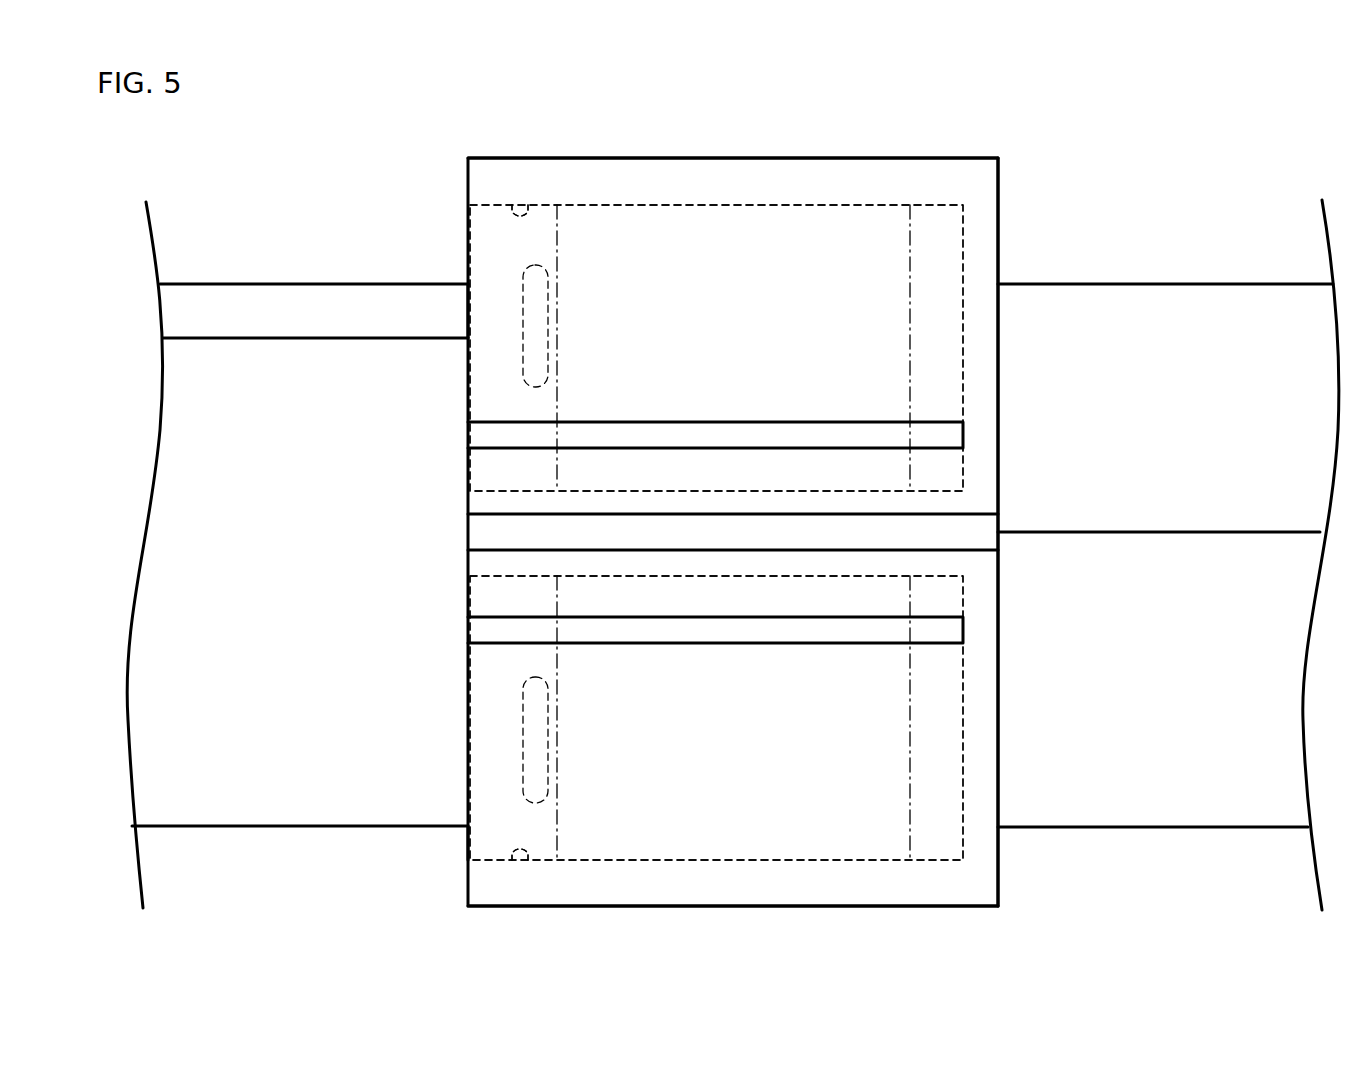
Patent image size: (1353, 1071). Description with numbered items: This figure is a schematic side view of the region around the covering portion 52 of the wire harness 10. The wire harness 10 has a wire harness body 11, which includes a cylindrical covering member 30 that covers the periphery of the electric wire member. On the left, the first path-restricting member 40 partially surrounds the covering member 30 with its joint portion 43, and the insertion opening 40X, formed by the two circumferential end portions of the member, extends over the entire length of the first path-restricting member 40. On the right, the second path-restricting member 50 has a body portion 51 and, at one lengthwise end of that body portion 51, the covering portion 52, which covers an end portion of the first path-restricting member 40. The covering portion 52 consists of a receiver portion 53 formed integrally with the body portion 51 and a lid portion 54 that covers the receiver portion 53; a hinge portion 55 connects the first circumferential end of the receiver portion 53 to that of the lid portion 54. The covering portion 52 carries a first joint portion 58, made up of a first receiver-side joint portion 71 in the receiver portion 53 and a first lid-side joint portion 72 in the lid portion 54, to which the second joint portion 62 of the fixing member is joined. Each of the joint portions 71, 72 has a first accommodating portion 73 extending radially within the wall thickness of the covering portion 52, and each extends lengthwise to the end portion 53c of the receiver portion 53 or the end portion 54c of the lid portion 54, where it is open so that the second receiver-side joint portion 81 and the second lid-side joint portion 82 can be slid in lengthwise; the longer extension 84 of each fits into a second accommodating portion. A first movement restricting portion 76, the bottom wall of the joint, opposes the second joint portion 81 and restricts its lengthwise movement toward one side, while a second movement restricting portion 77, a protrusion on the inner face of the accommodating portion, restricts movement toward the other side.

The wire harness 10 is at (1005, 121).
The wire harness body 11 is at (1134, 282).
The covering member 30 is at (220, 283).
The first path-restricting member 40 is at (232, 829).
The insertion opening 40X is at (305, 338).
The joint portion 43 is at (350, 773).
The second path-restricting member 50 is at (1203, 829).
The body portion 51 is at (1118, 829).
The covering portion 52 is at (733, 907).
The receiver portion 53 is at (833, 890).
The end portion of the receiver portion 53c is at (468, 843).
The lid portion 54 is at (733, 158).
The end portion of the lid portion 54c is at (468, 358).
The hinge portion 55 is at (988, 538).
The first joint portion 58 is at (520, 532).
The second joint portion 62 is at (716, 532).
The first receiver-side joint portion 71 is at (528, 860).
The first lid-side joint portion 72 is at (528, 205).
The first accommodating portion 73 is at (707, 422).
The first movement restricting portion 76 is at (963, 298).
The second movement restricting portion 77 is at (523, 282).
The second receiver-side joint portion 81 is at (557, 662).
The second lid-side joint portion 82 is at (557, 405).
The extension 84 is at (557, 240).